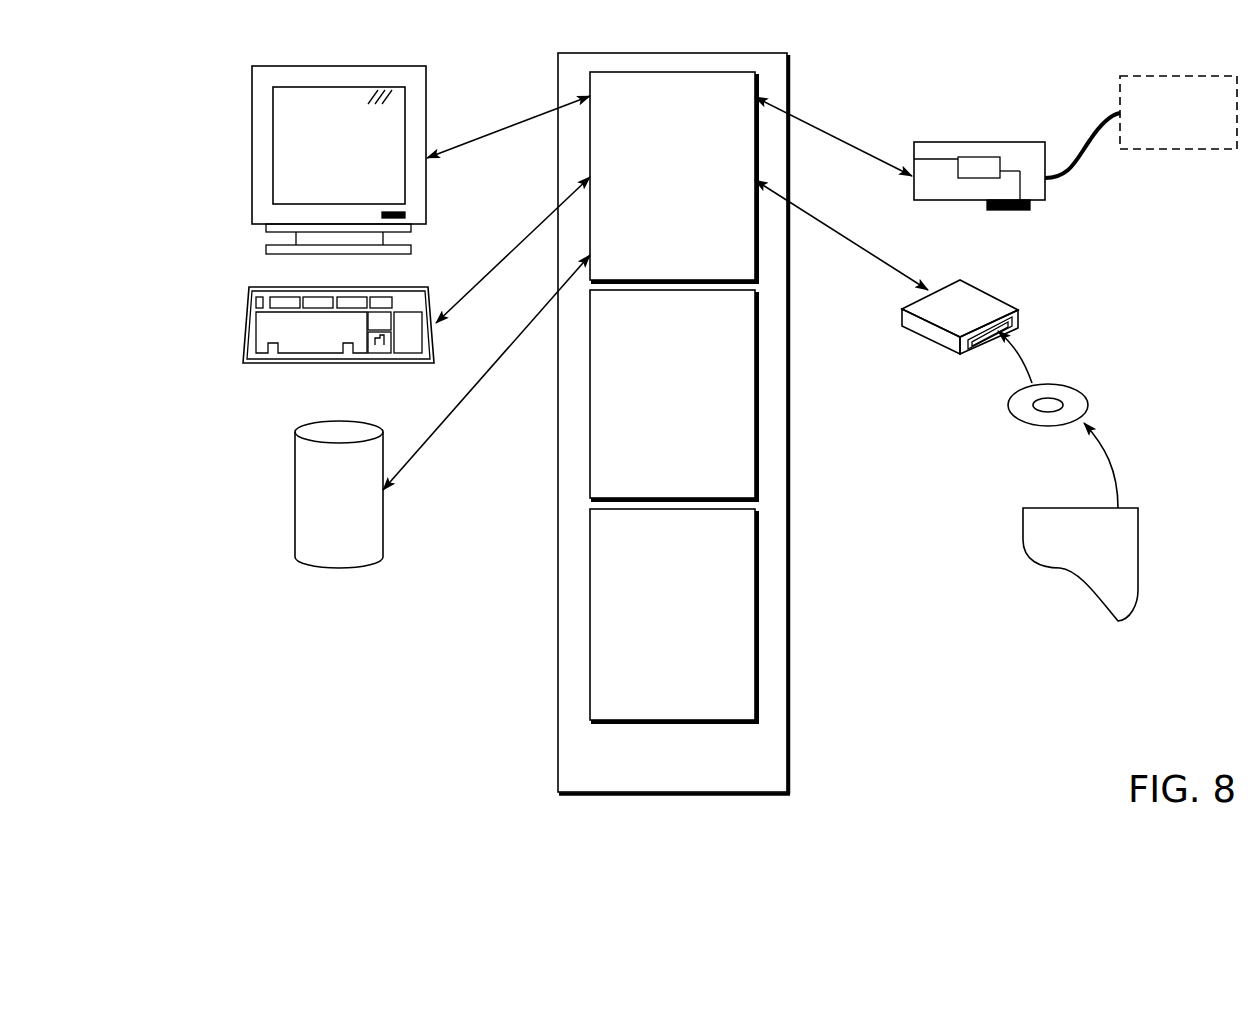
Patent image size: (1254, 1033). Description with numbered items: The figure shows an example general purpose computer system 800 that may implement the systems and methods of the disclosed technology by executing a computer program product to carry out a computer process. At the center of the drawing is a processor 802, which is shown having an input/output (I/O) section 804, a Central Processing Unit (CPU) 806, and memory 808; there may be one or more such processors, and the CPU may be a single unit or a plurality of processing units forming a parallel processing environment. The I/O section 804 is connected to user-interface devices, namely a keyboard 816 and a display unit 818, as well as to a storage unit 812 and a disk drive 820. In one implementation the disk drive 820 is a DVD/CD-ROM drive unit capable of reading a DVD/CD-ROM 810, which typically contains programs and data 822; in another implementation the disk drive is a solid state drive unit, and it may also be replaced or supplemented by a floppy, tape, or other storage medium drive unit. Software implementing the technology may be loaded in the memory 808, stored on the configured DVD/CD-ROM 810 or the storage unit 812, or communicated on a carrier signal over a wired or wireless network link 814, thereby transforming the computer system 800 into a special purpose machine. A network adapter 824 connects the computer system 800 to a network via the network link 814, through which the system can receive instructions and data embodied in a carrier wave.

The general purpose computer system 800 is at (445, 693).
The processor 802 is at (674, 423).
The input/output (I/O) section 804 is at (674, 177).
The Central Processing Unit (CPU) 806 is at (674, 395).
The memory 808 is at (674, 615).
The DVD/CD-ROM 810 is at (1085, 393).
The storage unit 812 is at (295, 483).
The network link 814 is at (1072, 172).
The keyboard 816 is at (248, 322).
The display unit 818 is at (252, 162).
The disk drive 820 is at (983, 291).
The programs and data 822 is at (1023, 522).
The network adapter 824 is at (950, 142).